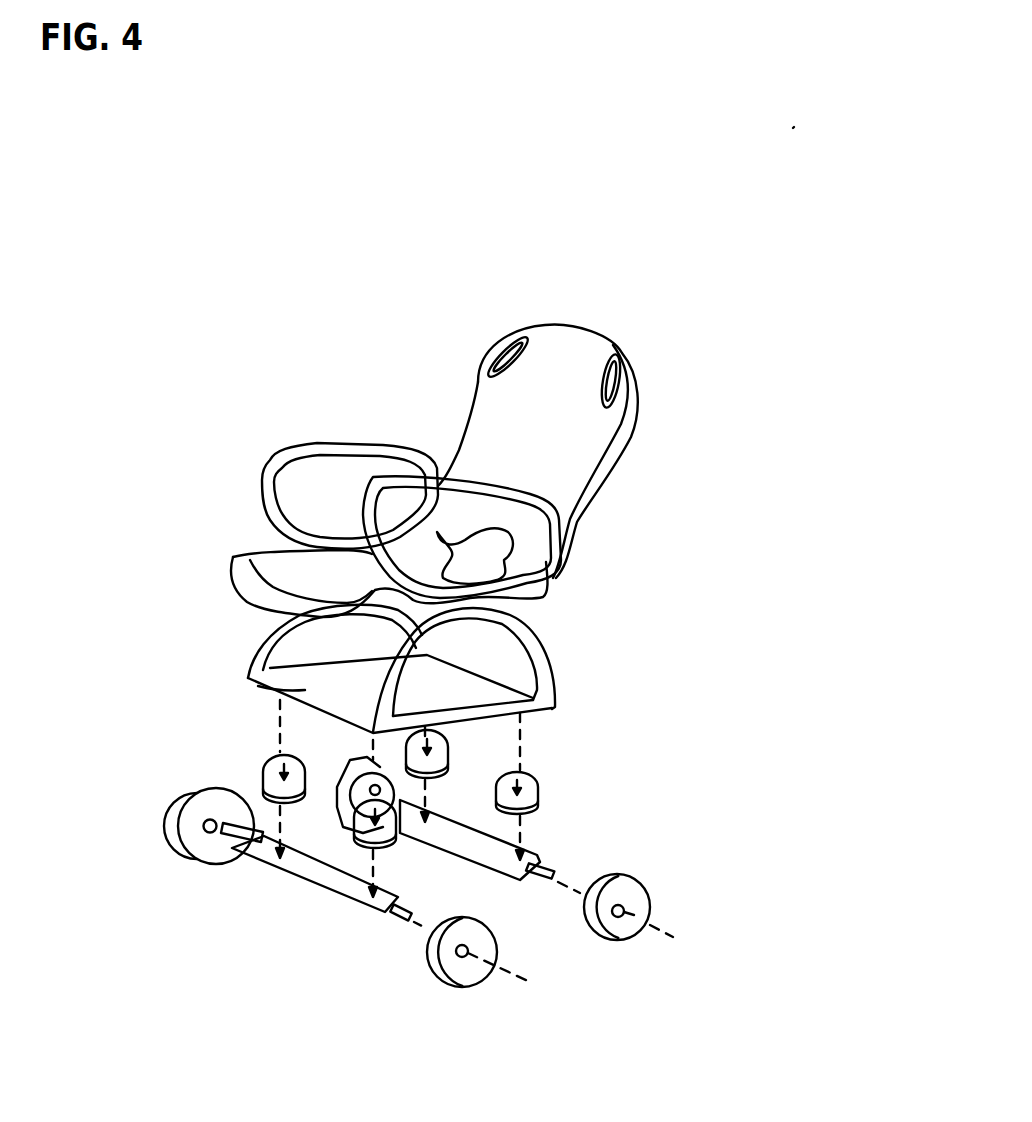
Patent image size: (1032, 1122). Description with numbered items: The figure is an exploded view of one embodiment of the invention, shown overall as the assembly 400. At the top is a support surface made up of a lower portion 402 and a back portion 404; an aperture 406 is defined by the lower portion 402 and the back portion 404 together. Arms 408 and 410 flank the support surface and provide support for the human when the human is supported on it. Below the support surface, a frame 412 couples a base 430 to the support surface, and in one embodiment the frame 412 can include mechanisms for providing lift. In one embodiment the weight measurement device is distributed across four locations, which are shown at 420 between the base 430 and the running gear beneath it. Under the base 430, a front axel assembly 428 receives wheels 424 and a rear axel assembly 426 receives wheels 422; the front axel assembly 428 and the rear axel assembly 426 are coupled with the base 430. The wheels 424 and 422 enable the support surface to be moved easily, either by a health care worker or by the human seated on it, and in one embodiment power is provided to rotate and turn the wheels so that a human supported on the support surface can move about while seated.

The seat assembly 400 is at (802, 120).
The lower portion 402 is at (267, 561).
The back portion 404 is at (496, 413).
The aperture 406 is at (487, 557).
The arm 408 is at (278, 455).
The arm 410 is at (417, 477).
The frame 412 is at (282, 648).
The weight measurement device locations 420 is at (262, 772).
The wheels 422 is at (356, 770).
The wheels 424 is at (183, 853).
The rear axel assembly 426 is at (495, 862).
The front axel assembly 428 is at (347, 897).
The base 430 is at (250, 685).